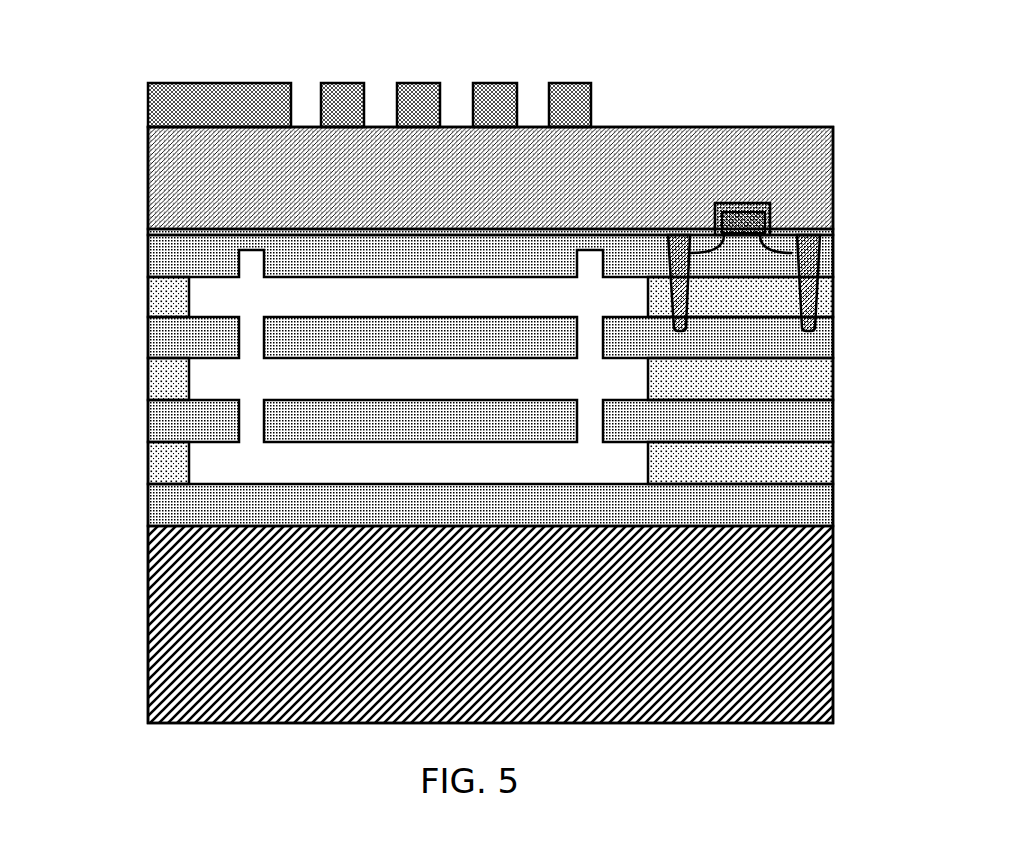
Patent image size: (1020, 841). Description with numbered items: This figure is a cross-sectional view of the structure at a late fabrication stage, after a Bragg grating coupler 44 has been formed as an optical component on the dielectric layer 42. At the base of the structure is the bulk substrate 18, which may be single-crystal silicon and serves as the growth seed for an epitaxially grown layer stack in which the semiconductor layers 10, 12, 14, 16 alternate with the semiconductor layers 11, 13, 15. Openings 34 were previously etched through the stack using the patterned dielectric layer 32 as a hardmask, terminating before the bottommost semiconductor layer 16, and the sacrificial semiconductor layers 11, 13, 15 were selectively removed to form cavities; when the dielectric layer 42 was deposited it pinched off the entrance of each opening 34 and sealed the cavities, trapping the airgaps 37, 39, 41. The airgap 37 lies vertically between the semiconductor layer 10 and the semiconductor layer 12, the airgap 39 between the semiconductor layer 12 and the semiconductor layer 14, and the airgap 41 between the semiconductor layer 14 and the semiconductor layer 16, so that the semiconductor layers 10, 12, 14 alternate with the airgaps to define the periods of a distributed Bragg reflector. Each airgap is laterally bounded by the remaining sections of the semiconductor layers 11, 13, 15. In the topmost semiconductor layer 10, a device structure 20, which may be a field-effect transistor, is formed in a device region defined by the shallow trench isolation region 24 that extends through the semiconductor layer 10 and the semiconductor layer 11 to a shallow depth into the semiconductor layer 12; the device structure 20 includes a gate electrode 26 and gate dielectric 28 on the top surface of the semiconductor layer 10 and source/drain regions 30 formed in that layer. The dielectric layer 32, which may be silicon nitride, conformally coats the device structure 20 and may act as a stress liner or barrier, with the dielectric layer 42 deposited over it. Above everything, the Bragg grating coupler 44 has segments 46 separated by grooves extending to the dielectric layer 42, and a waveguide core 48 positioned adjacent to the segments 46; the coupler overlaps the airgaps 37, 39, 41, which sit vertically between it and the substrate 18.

The Bragg grating coupler 44 is at (607, 50).
The waveguide core 48 is at (182, 109).
The segments 46 is at (505, 107).
The dielectric layer 42 is at (177, 191).
The dielectric layer 32 is at (177, 234).
The device structure 20 is at (803, 182).
The gate electrode 26 is at (770, 209).
The gate dielectric 28 is at (772, 227).
The source/drain regions 30 is at (790, 250).
The semiconductor layer 10 is at (762, 266).
The shallow trench isolation region 24 is at (808, 297).
The semiconductor layer 11 is at (173, 302).
The semiconductor layer 12 is at (787, 342).
The semiconductor layer 13 is at (173, 378).
The semiconductor layer 14 is at (785, 423).
The semiconductor layer 15 is at (173, 466).
The semiconductor layer 16 is at (785, 510).
The substrate 18 is at (203, 647).
The openings 34 is at (257, 343).
The airgap 37 is at (438, 310).
The airgap 39 is at (438, 392).
The airgap 41 is at (438, 474).